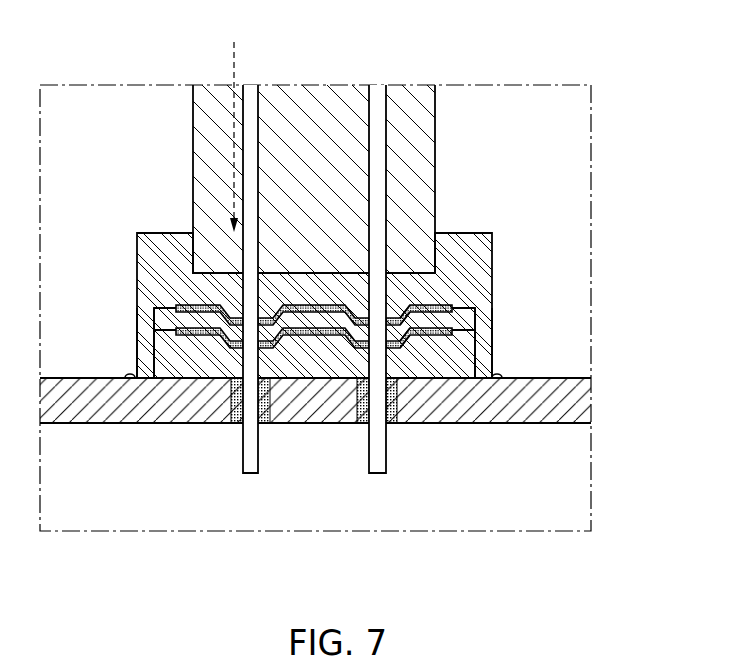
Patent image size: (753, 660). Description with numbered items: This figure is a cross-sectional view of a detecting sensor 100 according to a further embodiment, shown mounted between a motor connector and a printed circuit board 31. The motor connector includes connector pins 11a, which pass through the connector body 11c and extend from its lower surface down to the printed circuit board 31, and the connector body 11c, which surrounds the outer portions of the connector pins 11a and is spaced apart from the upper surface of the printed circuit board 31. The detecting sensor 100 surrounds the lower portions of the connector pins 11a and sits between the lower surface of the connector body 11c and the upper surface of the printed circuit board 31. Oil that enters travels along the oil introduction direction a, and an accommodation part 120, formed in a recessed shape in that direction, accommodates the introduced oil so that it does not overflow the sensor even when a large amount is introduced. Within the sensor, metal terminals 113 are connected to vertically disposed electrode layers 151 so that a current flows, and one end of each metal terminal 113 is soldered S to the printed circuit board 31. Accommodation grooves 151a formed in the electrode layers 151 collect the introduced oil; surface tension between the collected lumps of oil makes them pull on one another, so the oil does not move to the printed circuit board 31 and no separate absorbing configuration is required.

The oil introduction direction a is at (234, 123).
The connector pin 11a is at (380, 133).
The connector body 11c is at (412, 180).
The accommodation part 120 is at (492, 250).
The detecting sensor 100 is at (492, 288).
The electrode layer 151 is at (492, 303).
The accommodation groove 151a is at (428, 335).
The metal terminal 113 is at (150, 351).
The printed circuit board 31 is at (588, 402).
The solder S is at (128, 382).